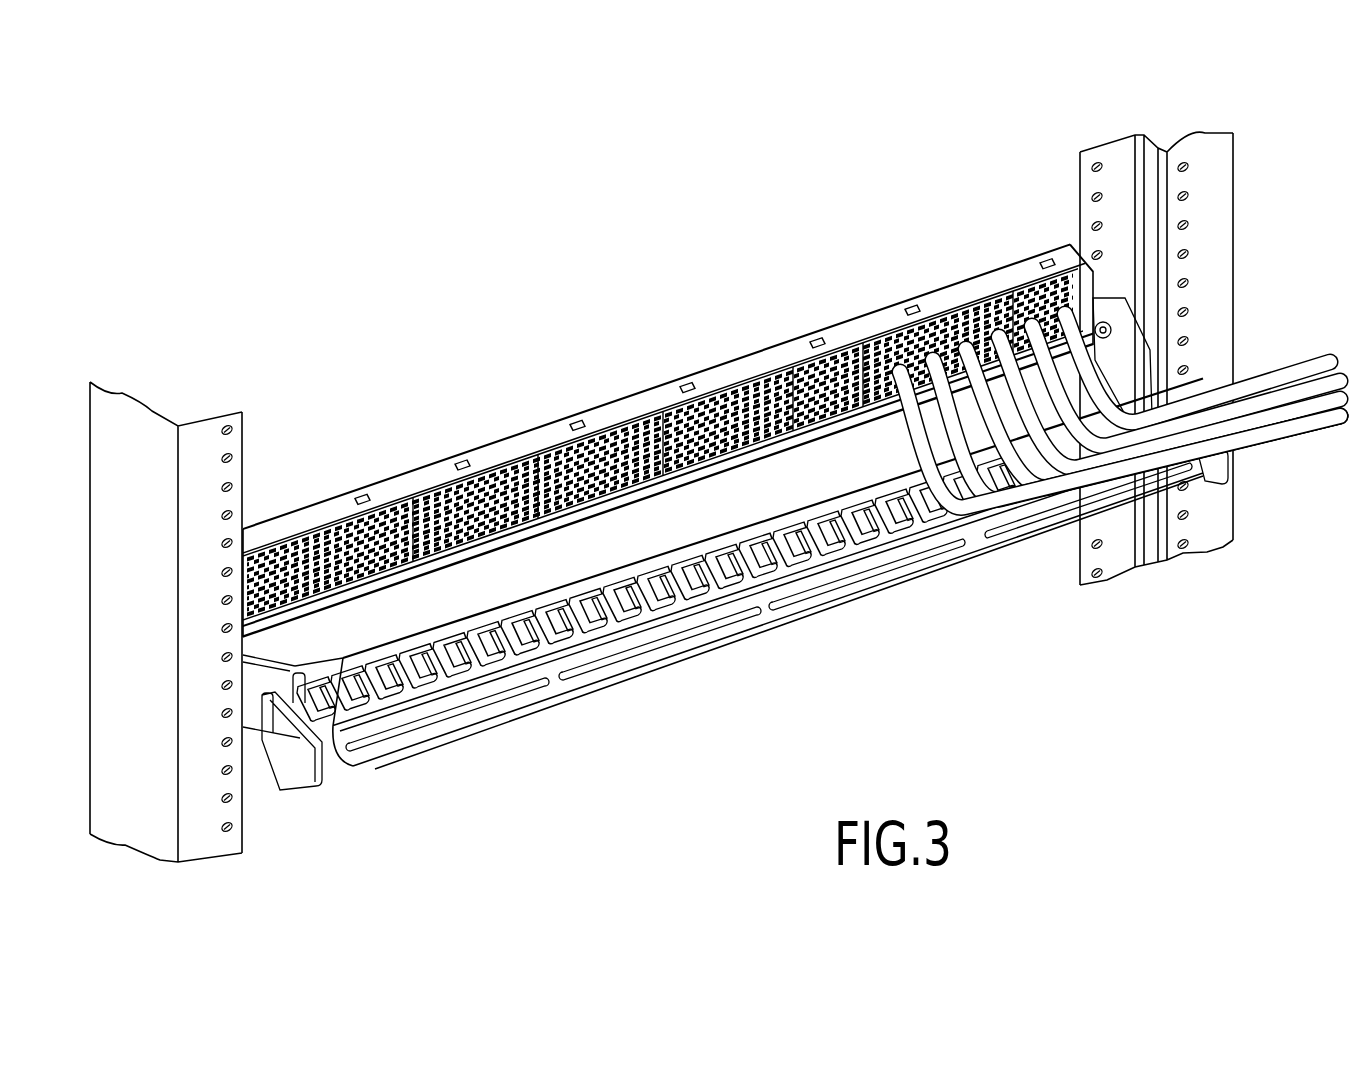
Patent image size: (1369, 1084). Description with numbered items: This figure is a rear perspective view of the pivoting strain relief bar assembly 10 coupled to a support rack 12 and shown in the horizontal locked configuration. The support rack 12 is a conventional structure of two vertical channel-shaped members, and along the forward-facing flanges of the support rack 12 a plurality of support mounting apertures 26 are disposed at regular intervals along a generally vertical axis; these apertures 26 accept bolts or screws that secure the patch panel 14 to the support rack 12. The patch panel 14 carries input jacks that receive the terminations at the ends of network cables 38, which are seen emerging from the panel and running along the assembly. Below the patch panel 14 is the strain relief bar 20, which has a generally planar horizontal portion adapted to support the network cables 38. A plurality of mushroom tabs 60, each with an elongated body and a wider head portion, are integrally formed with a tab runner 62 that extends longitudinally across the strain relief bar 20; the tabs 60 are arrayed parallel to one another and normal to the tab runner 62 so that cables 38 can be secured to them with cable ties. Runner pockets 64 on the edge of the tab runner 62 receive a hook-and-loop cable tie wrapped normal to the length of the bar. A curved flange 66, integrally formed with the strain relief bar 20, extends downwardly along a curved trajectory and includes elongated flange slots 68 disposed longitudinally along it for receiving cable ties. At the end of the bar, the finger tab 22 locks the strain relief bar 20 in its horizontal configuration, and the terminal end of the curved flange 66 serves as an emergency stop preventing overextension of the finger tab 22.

The pivoting strain relief bar assembly 10 is at (723, 672).
The support rack 12 is at (661, 465).
The patch panel 14 is at (536, 420).
The strain relief bar 20 is at (740, 562).
The finger tab 22 is at (300, 762).
The support mounting apertures 26 is at (1092, 198).
The network cable 38 is at (1262, 382).
The mushroom tabs 60 is at (835, 522).
The tab runner 62 is at (613, 582).
The runner pockets 64 is at (320, 672).
The curved flange 66 is at (905, 590).
The elongated flange slots 68 is at (490, 690).